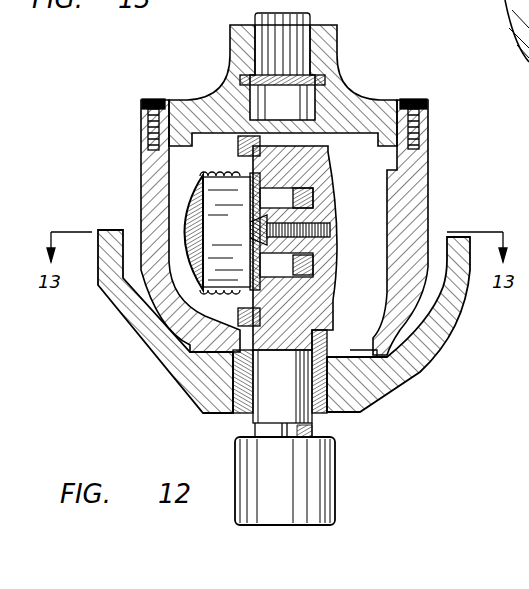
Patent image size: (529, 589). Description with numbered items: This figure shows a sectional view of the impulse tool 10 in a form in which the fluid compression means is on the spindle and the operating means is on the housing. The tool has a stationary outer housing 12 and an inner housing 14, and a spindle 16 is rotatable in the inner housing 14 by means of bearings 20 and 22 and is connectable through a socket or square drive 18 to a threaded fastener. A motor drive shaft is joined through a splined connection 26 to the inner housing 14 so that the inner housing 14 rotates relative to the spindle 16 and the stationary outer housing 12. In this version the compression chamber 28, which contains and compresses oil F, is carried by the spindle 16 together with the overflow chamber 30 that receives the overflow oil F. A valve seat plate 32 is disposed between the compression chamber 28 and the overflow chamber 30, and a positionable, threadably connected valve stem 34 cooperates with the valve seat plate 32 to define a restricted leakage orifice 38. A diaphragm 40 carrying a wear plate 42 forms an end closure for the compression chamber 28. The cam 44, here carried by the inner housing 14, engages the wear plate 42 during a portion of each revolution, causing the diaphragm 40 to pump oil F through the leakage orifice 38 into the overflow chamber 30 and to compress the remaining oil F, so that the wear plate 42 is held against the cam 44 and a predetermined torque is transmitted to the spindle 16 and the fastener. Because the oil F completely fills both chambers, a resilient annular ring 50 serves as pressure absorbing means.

The impulse tool 10 is at (116, 124).
The stationary outer housing 12 is at (195, 370).
The inner housing 14 is at (400, 300).
The spindle 16 is at (275, 405).
The socket or square drive 18 is at (310, 480).
The bearing 20 is at (350, 393).
The bearing 22 is at (338, 81).
The splined connection 26 is at (290, 40).
The compression chamber 28 is at (185, 197).
The overflow chamber 30 is at (285, 207).
The valve seat plate 32 is at (263, 298).
The valve stem 34 is at (340, 232).
The restricted leakage orifice 38 is at (253, 227).
The diaphragm 40 is at (223, 290).
The wear plate 42 is at (193, 223).
The cam 44 is at (390, 212).
The resilient annular ring 50 is at (340, 206).
The oil F is at (230, 183).